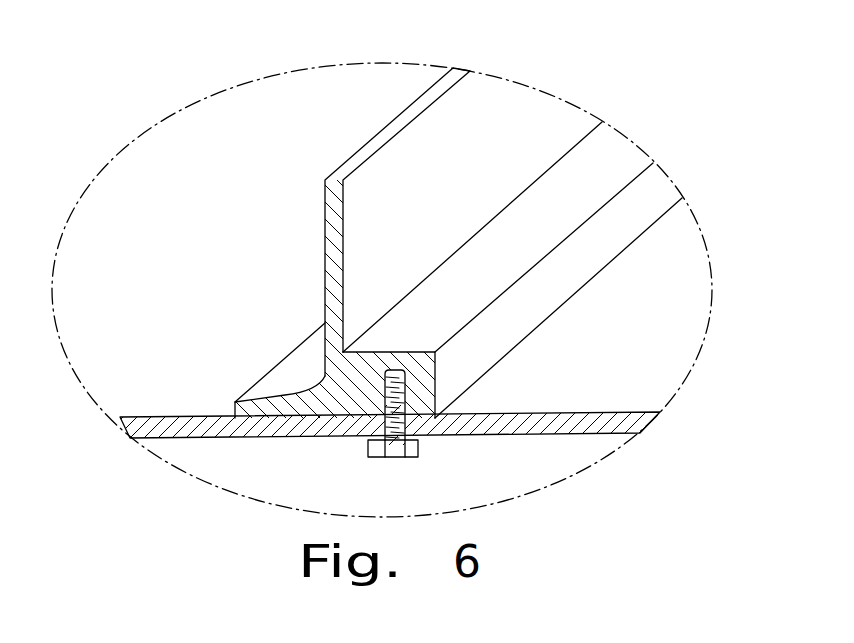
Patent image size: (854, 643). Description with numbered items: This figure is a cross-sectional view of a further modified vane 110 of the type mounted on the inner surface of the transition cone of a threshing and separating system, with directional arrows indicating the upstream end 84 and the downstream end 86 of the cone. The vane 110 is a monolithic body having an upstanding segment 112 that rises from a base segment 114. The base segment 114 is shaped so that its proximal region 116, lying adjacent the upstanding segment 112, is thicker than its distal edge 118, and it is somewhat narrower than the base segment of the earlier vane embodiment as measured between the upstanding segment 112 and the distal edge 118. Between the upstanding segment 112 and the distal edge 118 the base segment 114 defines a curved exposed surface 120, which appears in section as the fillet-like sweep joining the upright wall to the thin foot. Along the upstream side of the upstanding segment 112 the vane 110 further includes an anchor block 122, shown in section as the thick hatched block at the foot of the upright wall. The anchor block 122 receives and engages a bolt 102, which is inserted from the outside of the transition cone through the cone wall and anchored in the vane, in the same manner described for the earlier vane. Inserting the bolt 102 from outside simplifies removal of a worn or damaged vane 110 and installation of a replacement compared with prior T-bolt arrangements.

The vane 110 is at (640, 99).
The upstanding segment 112 is at (443, 147).
The base segment 114 is at (255, 420).
The proximal region 116 is at (320, 395).
The distal edge 118 is at (235, 402).
The curved exposed surface 120 is at (295, 378).
The anchor block 122 is at (632, 210).
The bolt 102 is at (400, 448).
The upstream end 84 is at (682, 325).
The downstream end 86 is at (84, 282).